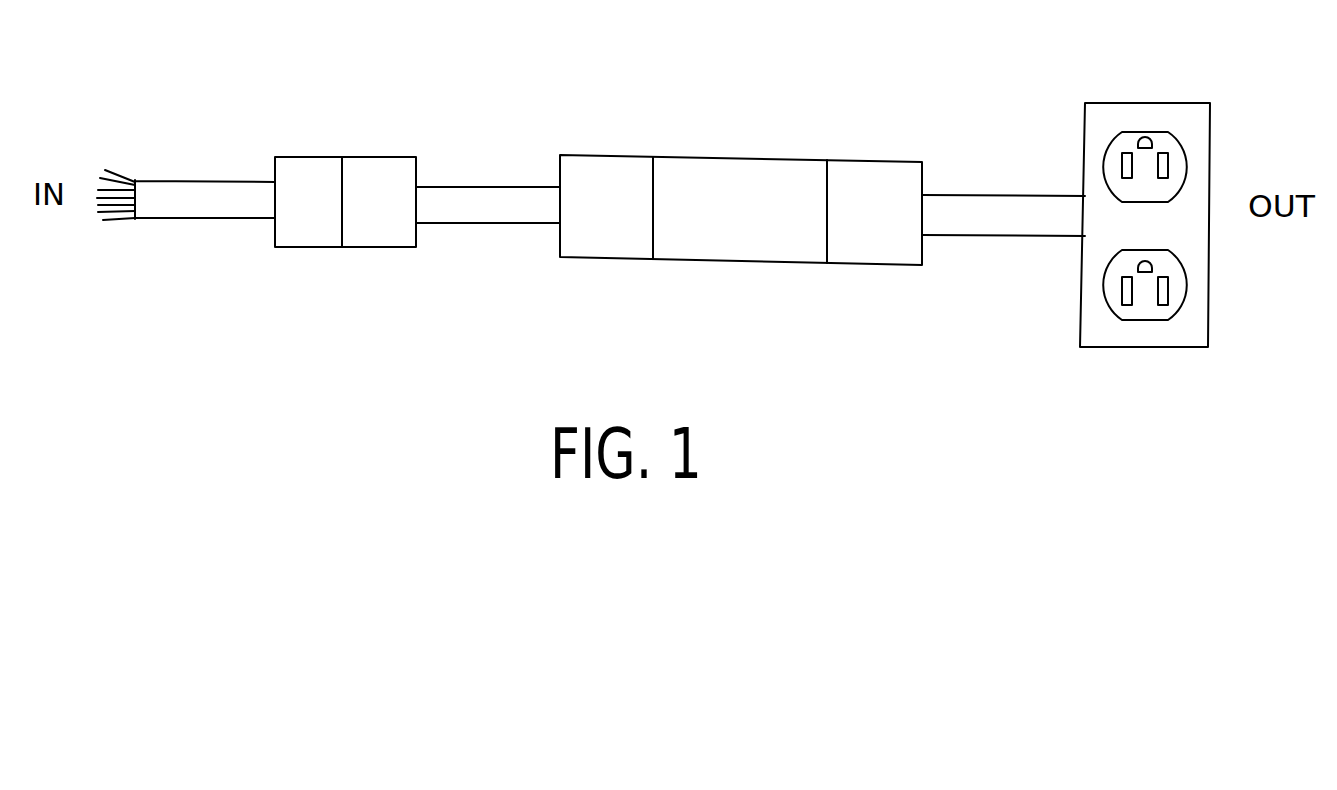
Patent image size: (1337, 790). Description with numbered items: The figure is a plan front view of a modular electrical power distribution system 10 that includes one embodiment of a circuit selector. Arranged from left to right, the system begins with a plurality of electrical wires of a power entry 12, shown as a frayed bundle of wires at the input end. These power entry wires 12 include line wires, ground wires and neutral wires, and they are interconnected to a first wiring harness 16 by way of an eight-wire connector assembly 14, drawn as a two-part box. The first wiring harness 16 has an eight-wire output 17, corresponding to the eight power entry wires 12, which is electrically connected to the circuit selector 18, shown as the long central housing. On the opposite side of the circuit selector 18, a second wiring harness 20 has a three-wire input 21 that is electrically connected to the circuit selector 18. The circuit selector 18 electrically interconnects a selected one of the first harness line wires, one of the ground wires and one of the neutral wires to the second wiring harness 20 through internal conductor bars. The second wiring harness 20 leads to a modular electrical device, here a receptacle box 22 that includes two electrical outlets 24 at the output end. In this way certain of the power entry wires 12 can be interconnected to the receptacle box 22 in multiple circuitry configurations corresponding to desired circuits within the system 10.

The modular electrical power distribution system 10 is at (897, 377).
The power entry wires 12 is at (125, 167).
The connector assembly 14 is at (337, 157).
The first wiring harness 16 is at (475, 187).
The eight-wire output 17 is at (561, 205).
The circuit selector 18 is at (760, 158).
The second wiring harness 20 is at (992, 195).
The three-wire input 21 is at (922, 210).
The receptacle box 22 is at (1147, 103).
The electrical outlets 24 is at (1178, 258).